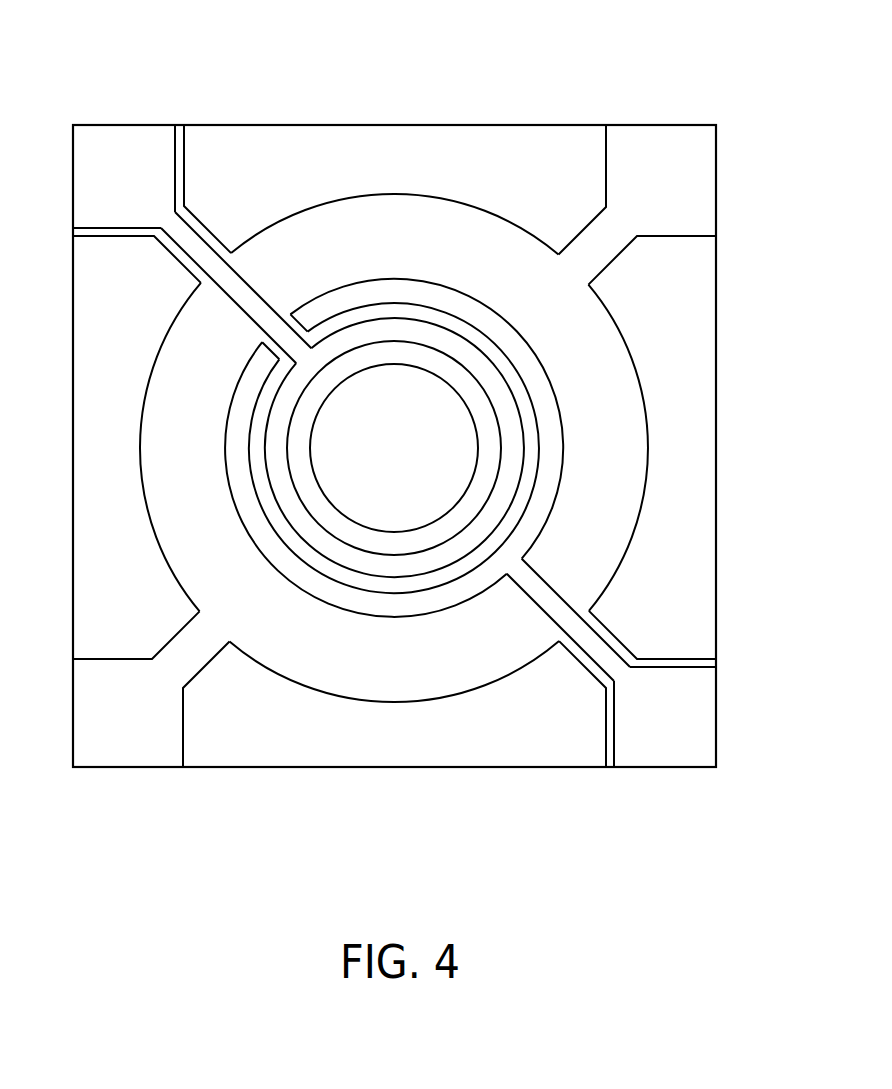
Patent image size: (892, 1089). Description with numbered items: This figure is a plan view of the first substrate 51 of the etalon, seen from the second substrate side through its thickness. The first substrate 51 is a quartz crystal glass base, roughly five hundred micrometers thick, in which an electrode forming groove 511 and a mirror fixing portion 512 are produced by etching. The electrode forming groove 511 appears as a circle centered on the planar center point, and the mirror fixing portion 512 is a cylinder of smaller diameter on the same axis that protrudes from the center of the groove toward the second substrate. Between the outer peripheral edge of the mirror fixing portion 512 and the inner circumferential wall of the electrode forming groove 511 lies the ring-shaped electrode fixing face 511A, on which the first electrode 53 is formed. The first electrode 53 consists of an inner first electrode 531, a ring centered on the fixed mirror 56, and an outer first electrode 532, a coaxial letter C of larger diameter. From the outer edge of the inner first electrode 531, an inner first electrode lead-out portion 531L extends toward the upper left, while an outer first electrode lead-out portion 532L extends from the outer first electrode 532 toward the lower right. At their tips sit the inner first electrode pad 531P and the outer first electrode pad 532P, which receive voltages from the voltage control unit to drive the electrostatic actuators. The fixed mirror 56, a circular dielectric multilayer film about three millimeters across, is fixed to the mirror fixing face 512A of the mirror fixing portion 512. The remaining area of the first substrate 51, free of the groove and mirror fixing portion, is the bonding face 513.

The first substrate 51 is at (716, 310).
The bonding face 513 is at (712, 393).
The electrode forming groove 511 is at (405, 690).
The electrode fixing face 511A is at (322, 668).
The mirror fixing portion 512 is at (347, 347).
The mirror fixing face 512A is at (412, 538).
The first electrode 53 is at (477, 246).
The inner first electrode 531 is at (412, 328).
The outer first electrode 532 is at (458, 297).
The inner first electrode lead-out portion 531L is at (246, 318).
The outer first electrode lead-out portion 532L is at (540, 575).
The inner first electrode pad 531P is at (123, 143).
The outer first electrode pad 532P is at (660, 747).
The fixed mirror 56 is at (383, 382).